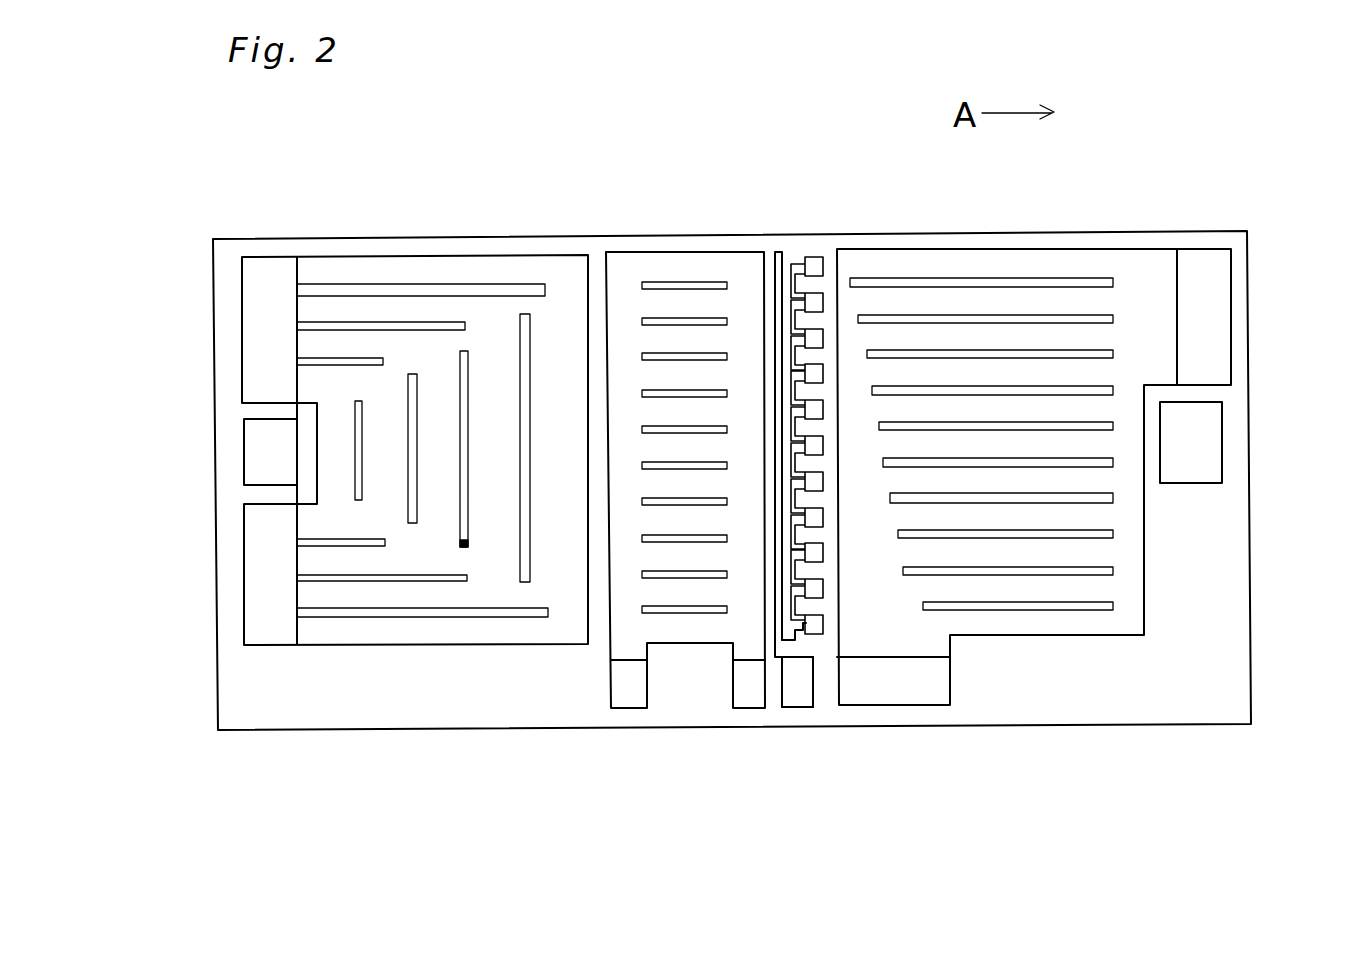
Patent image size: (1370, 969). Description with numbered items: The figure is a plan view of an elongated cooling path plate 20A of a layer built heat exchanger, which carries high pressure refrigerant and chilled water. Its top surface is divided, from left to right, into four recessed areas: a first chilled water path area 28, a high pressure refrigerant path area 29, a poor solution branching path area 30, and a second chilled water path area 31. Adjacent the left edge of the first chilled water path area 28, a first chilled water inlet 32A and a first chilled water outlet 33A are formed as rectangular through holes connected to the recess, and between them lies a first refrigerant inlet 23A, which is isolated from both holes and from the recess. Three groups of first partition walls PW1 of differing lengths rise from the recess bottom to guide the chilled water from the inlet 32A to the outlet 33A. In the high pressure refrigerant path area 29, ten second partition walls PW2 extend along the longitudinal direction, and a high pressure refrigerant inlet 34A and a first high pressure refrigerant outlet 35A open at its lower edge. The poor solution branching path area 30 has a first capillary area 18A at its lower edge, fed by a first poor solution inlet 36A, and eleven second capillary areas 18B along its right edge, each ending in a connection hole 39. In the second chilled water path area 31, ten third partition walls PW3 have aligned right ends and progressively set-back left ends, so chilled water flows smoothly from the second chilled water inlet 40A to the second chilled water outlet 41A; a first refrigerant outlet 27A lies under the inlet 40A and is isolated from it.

The cooling path plate 20A is at (635, 104).
The first chilled water path area 28 is at (465, 310).
The first chilled water inlet 32A is at (272, 262).
The first refrigerant inlet 23A is at (253, 458).
The first chilled water outlet 33A is at (273, 638).
The first partition walls PW1 is at (467, 547).
The high pressure refrigerant path area 29 is at (623, 292).
The second partition walls PW2 is at (687, 282).
The first high pressure refrigerant outlet 35A is at (620, 683).
The high pressure refrigerant inlet 34A is at (750, 685).
The poor solution branching path area 30 is at (781, 251).
The first poor solution inlet 36A is at (805, 687).
The first capillary area 18A is at (786, 646).
The second capillary areas 18B is at (803, 630).
The connection hole 39 is at (810, 260).
The second chilled water path area 31 is at (1047, 302).
The third partition walls PW3 is at (942, 315).
The second chilled water inlet 40A is at (1200, 262).
The first refrigerant outlet 27A is at (1207, 463).
The second chilled water outlet 41A is at (918, 681).